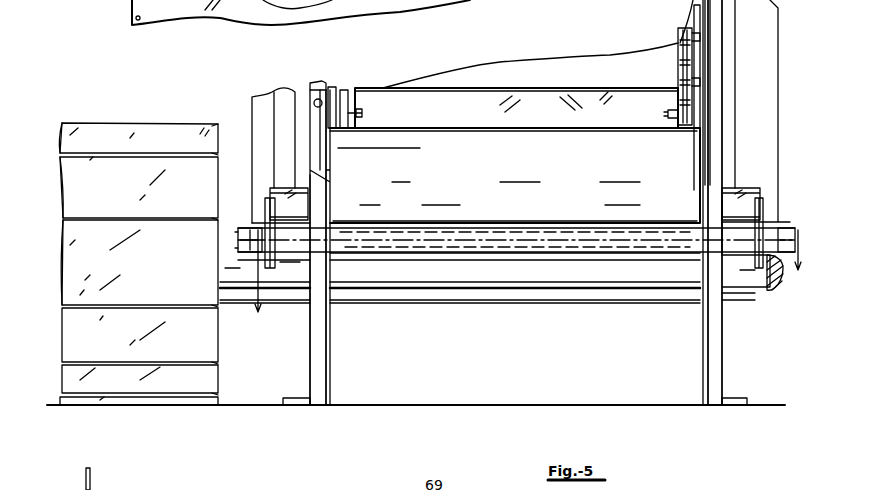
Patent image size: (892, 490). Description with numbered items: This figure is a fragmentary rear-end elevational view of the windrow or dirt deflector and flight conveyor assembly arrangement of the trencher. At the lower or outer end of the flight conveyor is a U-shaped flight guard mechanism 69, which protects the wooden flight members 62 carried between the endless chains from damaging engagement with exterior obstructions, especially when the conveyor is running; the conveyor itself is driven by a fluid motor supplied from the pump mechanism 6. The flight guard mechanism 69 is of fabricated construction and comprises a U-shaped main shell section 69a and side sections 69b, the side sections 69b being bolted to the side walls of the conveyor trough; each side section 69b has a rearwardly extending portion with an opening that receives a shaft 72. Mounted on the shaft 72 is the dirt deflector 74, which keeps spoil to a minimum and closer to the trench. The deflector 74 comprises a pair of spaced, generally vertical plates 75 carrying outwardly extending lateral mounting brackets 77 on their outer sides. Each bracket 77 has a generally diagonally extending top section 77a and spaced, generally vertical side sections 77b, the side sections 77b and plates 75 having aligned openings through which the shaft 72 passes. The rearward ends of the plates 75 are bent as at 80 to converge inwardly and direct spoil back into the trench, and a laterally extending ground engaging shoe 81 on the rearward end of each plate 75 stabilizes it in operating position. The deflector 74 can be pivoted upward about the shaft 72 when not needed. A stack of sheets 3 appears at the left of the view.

The stack of sheets 3 is at (145, 123).
The pump mechanism 6 is at (527, 281).
The flight members 62 is at (595, 88).
The flight guard mechanism 69 is at (482, 119).
The main shell section 69a is at (437, 128).
The side sections 69b is at (330, 142).
The shaft 72 is at (490, 223).
The dirt deflector 74 is at (340, 334).
The plates 75 is at (310, 328).
The lateral mounting brackets 77 is at (278, 188).
The top section 77a is at (287, 192).
The side sections 77b is at (272, 210).
The bent portion 80 is at (320, 353).
The ground engaging shoe 81 is at (296, 398).